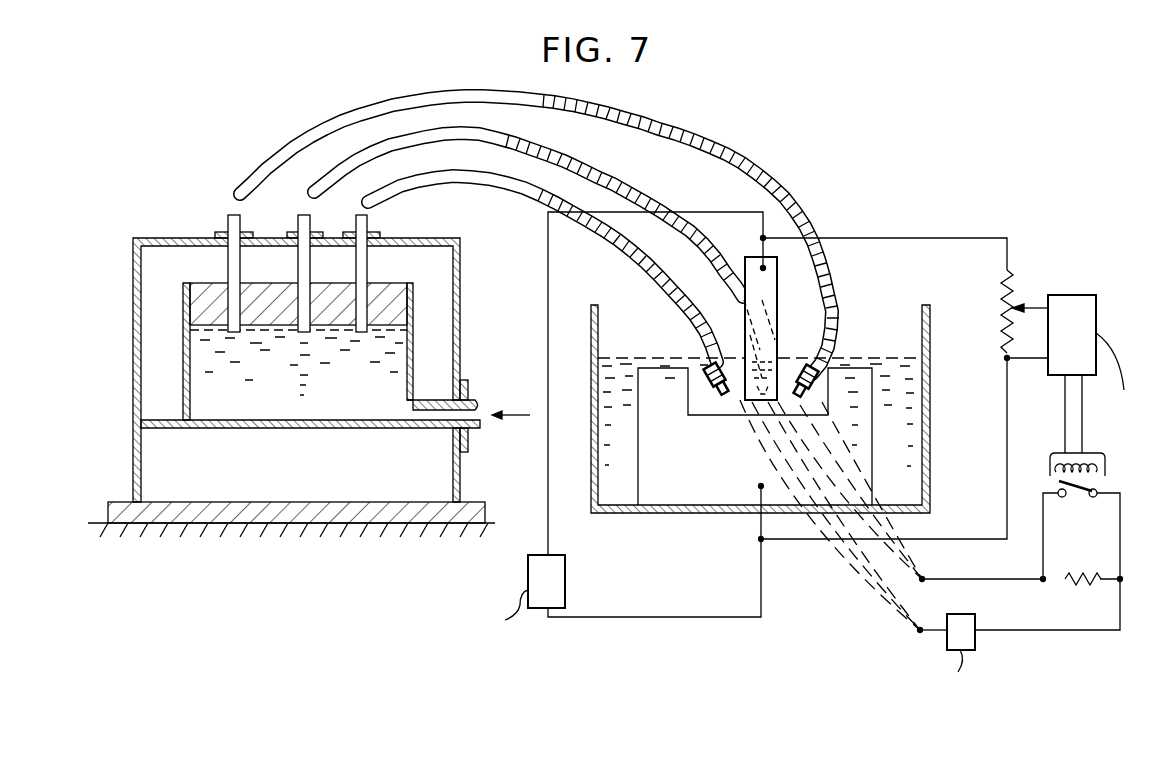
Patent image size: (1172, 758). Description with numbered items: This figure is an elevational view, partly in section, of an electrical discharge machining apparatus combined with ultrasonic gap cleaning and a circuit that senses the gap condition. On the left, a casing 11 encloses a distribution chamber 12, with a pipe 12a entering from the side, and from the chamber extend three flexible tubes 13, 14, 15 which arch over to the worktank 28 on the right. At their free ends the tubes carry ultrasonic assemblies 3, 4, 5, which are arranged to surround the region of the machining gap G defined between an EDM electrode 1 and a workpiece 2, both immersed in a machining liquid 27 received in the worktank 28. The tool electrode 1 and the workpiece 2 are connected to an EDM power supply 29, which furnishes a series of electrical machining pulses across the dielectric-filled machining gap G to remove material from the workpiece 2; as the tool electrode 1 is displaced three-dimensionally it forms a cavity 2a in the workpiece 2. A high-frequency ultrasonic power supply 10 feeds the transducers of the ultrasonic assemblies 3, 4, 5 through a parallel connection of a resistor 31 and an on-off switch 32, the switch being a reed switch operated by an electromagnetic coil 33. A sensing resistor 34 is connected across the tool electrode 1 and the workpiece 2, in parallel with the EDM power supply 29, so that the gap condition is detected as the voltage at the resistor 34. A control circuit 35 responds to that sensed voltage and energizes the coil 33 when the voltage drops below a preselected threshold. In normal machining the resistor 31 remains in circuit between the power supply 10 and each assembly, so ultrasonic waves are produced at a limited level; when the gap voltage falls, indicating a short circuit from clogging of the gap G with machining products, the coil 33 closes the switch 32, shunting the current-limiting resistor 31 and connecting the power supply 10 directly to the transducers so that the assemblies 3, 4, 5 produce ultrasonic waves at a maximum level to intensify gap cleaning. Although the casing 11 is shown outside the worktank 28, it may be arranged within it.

The EDM electrode 1 is at (752, 272).
The workpiece 2 is at (714, 494).
The cavity 2a is at (820, 388).
The ultrasonic assembly 3 is at (714, 397).
The ultrasonic assembly 4 is at (745, 352).
The ultrasonic assembly 5 is at (796, 406).
The machining gap G is at (770, 410).
The high-frequency ultrasonic power supply 10 is at (975, 628).
The casing 11 is at (130, 282).
The distribution chamber 12 is at (190, 392).
The inlet pipe 12a is at (472, 402).
The flexible tube 13 is at (430, 185).
The flexible tube 14 is at (352, 166).
The flexible tube 15 is at (238, 190).
The machining liquid 27 is at (620, 360).
The worktank 28 is at (925, 494).
The EDM power supply 29 is at (528, 572).
The resistor 31 is at (1080, 586).
The on-off switch 32 is at (1076, 500).
The electromagnetic coil 33 is at (1050, 470).
The sensing resistor 34 is at (1012, 302).
The control circuit 35 is at (1058, 368).